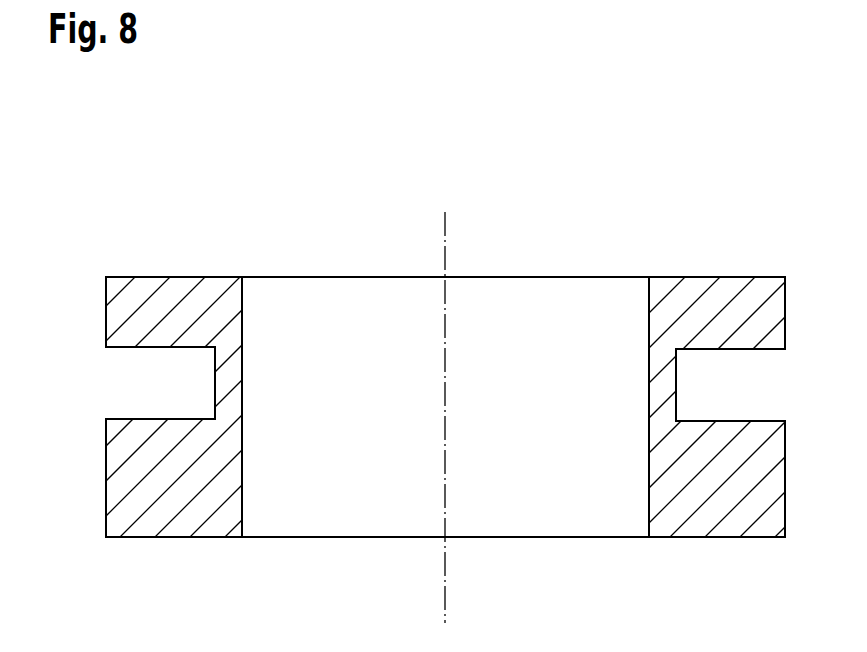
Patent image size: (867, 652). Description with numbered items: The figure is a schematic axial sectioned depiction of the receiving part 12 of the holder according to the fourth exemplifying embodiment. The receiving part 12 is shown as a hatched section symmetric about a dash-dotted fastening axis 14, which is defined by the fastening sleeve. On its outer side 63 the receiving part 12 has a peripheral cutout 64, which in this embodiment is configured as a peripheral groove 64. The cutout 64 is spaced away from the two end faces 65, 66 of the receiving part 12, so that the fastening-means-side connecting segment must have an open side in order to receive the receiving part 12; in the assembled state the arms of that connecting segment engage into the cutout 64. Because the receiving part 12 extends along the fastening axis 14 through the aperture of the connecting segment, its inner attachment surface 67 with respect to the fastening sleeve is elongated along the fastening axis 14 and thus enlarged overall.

The receiving part 12 is at (684, 205).
The fastening axis 14 is at (446, 245).
The outer side 63 is at (106, 455).
The cutout 64 is at (156, 420).
The end face 65 is at (158, 277).
The end face 66 is at (165, 537).
The attachment surface 67 is at (243, 467).